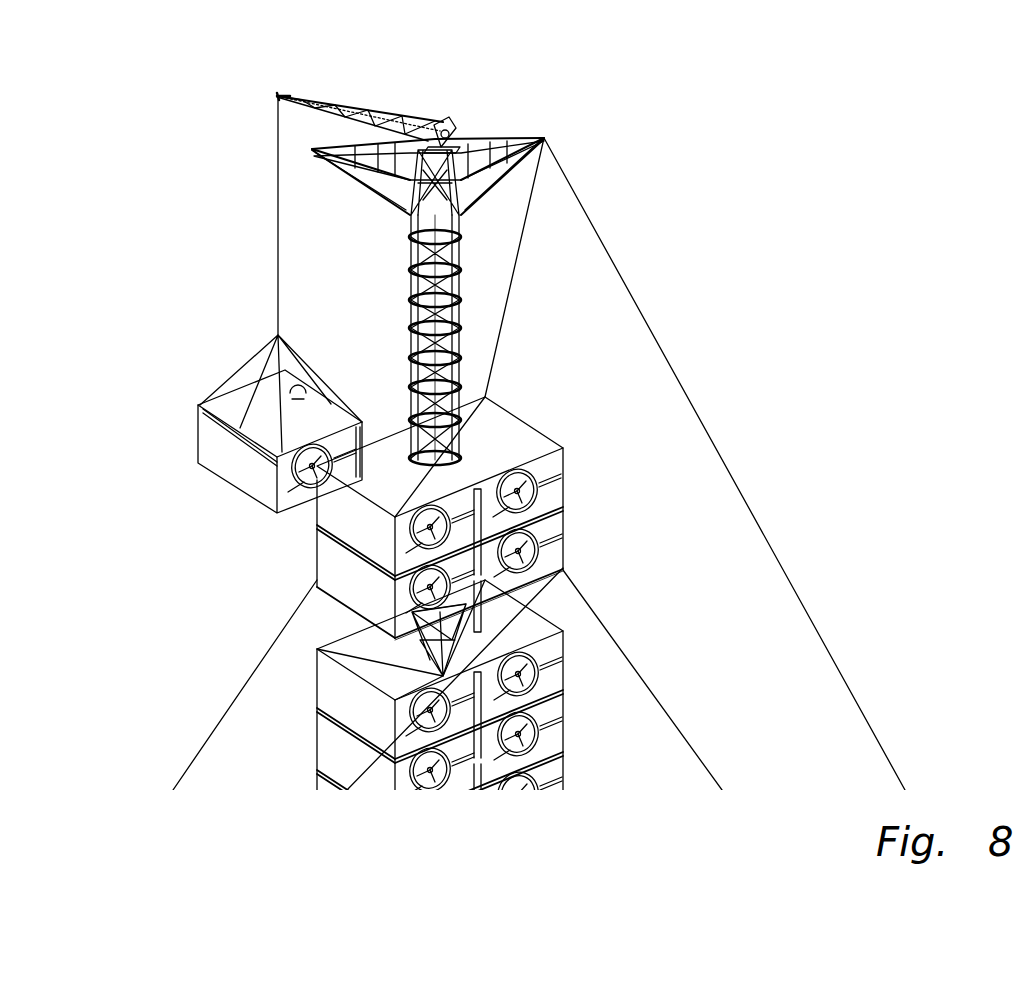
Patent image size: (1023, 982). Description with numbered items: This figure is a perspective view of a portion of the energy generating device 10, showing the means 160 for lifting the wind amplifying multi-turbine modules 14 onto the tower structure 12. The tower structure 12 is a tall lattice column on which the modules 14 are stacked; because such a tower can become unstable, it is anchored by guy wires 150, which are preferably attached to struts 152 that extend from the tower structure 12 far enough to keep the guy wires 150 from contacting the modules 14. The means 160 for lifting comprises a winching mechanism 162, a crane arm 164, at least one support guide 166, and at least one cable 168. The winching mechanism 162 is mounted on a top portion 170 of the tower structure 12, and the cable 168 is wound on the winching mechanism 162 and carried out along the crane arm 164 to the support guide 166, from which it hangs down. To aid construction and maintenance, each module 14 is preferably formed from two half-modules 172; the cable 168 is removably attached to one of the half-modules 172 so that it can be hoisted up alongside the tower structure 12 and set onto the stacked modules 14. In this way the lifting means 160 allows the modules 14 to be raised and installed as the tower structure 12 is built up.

The energy generating device 10 is at (532, 426).
The tower structure 12 is at (460, 258).
The wind amplifying multi-turbine module 14 is at (563, 473).
The guy wires 150 is at (660, 703).
The struts 152 is at (540, 595).
The means for lifting 160 is at (445, 122).
The winching mechanism 162 is at (452, 145).
The crane arm 164 is at (345, 103).
The support guide 166 is at (277, 95).
The cable 168 is at (277, 177).
The top portion 170 is at (544, 140).
The half-module 172 is at (262, 505).